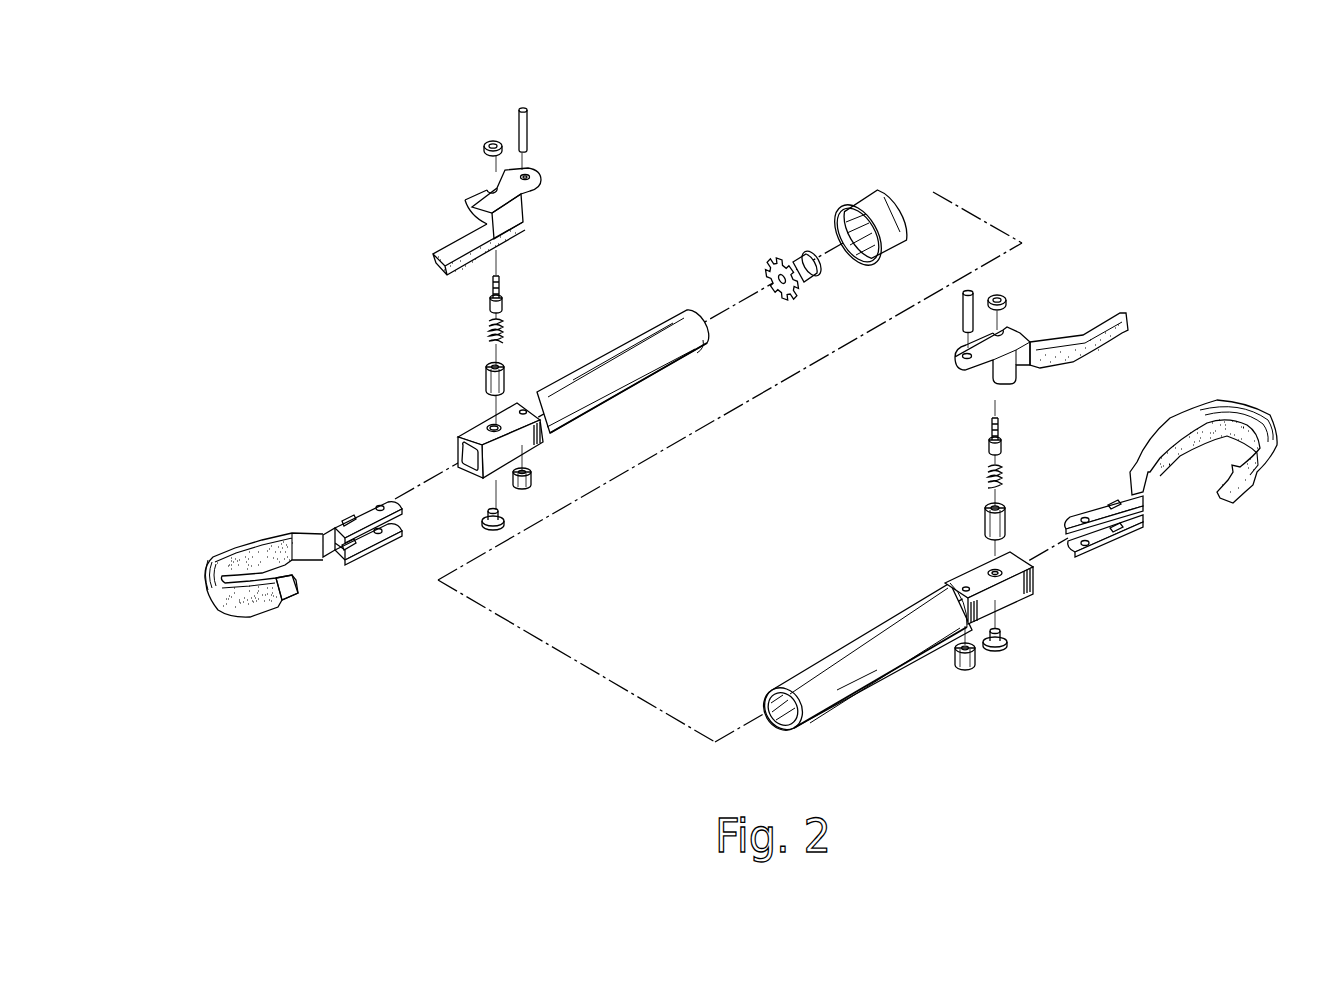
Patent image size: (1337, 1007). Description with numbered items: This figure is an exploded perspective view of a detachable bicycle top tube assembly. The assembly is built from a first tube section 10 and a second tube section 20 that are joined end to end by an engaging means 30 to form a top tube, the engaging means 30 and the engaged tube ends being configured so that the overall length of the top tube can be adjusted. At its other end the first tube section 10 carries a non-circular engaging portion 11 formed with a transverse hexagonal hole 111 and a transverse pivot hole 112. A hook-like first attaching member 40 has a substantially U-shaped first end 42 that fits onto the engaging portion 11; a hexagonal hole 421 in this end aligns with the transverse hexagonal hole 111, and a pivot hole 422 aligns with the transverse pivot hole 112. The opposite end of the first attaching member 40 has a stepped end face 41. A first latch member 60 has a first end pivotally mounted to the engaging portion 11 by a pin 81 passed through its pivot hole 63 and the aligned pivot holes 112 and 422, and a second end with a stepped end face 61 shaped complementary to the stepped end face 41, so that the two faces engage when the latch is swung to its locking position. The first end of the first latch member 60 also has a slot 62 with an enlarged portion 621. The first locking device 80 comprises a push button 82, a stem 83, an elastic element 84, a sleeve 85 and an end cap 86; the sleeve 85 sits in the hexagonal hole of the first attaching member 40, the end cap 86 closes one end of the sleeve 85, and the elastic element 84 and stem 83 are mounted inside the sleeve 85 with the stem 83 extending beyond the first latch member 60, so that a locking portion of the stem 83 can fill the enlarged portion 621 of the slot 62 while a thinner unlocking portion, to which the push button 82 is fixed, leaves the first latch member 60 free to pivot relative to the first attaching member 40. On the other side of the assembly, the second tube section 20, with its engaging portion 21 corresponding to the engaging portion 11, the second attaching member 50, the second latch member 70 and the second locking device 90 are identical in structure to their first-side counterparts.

The first tube section 10 is at (641, 333).
The engaging portion 11 is at (488, 440).
The transverse hexagonal hole 111 is at (488, 427).
The transverse pivot hole 112 is at (549, 414).
The second tube section 20 is at (885, 680).
The second connecting block 21 is at (1032, 603).
The engaging means 30 is at (835, 173).
The first attaching member 40 is at (240, 604).
The stepped end face 41 is at (294, 580).
The first end 42 is at (324, 471).
The hexagonal hole 421 is at (352, 509).
The pivot hole 422 is at (378, 504).
The second attaching member 50 is at (1266, 400).
The first latch member 60 is at (477, 196).
The stepped end face 61 is at (440, 266).
The slot 62 is at (488, 190).
The pivot hole 63 is at (531, 176).
The enlarged portion 621 is at (494, 200).
The second latch member 70 is at (1090, 313).
The first locking device 80 is at (483, 285).
The pin 81 is at (530, 130).
The push button 82 is at (492, 140).
The stem 83 is at (492, 290).
The elastic element 84 is at (487, 338).
The sleeve 85 is at (487, 388).
The end cap 86 is at (528, 534).
The second locking device 90 is at (1017, 300).